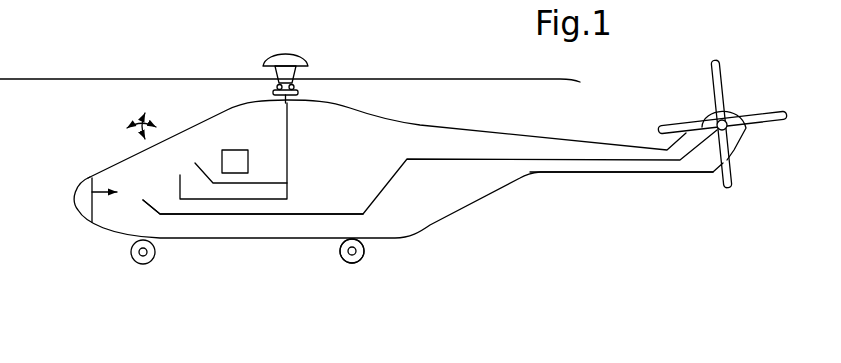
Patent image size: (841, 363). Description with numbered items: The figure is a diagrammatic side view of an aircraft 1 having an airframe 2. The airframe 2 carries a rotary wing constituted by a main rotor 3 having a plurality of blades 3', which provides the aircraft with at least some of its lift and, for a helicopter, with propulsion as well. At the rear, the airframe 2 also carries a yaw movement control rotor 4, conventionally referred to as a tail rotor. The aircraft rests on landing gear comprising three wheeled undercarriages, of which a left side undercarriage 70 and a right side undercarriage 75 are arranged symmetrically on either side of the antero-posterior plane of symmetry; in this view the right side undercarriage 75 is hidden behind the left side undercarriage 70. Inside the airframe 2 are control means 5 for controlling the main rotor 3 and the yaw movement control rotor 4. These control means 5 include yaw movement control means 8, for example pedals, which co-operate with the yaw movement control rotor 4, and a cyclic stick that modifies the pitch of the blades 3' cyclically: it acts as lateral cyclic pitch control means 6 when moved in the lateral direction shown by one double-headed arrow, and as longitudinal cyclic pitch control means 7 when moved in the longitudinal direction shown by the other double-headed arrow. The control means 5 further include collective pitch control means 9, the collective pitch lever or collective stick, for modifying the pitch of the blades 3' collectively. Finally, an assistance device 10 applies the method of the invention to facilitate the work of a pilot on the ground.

The aircraft 1 is at (393, 175).
The airframe 2 is at (445, 214).
The main rotor 3 is at (290, 55).
The blades 3' is at (401, 46).
The yaw movement control rotor 4 is at (734, 82).
The control means 5 is at (72, 193).
The lateral cyclic pitch control means 6 is at (140, 130).
The longitudinal cyclic pitch control means 7 is at (140, 117).
The yaw movement control means 8 is at (139, 212).
The collective pitch control means 9 is at (206, 174).
The assistance device 10 is at (240, 150).
The left side undercarriage 70 is at (357, 270).
The right side undercarriage 75 is at (326, 247).